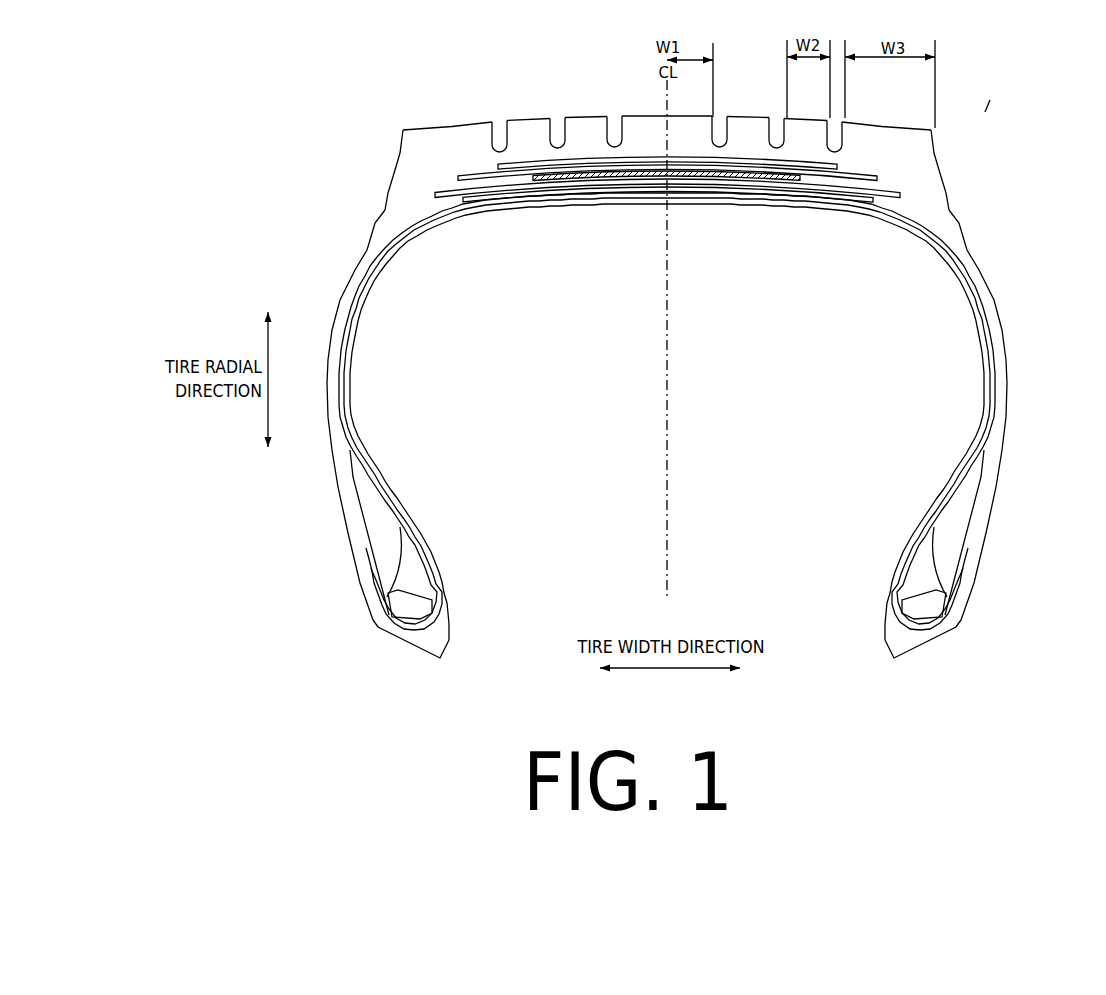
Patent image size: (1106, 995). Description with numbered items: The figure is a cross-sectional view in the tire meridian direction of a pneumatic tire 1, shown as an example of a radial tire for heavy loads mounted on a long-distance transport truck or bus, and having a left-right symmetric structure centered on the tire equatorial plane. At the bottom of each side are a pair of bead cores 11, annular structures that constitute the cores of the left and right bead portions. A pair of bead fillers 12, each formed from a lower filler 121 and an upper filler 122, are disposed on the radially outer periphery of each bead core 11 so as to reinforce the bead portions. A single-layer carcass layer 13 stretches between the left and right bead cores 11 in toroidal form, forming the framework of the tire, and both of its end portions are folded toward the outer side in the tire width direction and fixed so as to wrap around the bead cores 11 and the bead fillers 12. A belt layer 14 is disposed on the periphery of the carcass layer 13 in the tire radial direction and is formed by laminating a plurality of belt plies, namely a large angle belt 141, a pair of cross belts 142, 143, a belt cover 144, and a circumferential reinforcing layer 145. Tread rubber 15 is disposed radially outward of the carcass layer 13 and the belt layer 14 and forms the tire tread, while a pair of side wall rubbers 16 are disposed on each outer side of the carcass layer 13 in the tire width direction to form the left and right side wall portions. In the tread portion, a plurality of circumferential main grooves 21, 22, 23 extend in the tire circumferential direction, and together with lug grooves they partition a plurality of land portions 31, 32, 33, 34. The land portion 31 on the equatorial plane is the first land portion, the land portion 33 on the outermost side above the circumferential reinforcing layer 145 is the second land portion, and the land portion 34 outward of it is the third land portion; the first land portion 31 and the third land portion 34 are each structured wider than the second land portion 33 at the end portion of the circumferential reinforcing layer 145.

The pneumatic tire 1 is at (984, 110).
The bead core 11 is at (402, 604).
The bead filler 12 is at (669, 532).
The lower filler 121 is at (402, 560).
The upper filler 122 is at (373, 530).
The carcass layer 13 is at (408, 238).
The belt layer 14 is at (667, 217).
The large angle belt 141 is at (710, 248).
The cross belt 142 is at (830, 184).
The cross belt 143 is at (793, 172).
The belt cover 144 is at (758, 165).
The circumferential reinforcing layer 145 is at (722, 167).
The tread rubber 15 is at (544, 116).
The side wall rubber 16 is at (375, 224).
The circumferential main groove 21 is at (613, 127).
The circumferential main groove 22 is at (557, 127).
The circumferential main groove 23 is at (500, 130).
The first land portion 31 is at (693, 116).
The land portion 32 is at (588, 120).
The second land portion 33 is at (524, 121).
The third land portion 34 is at (452, 127).